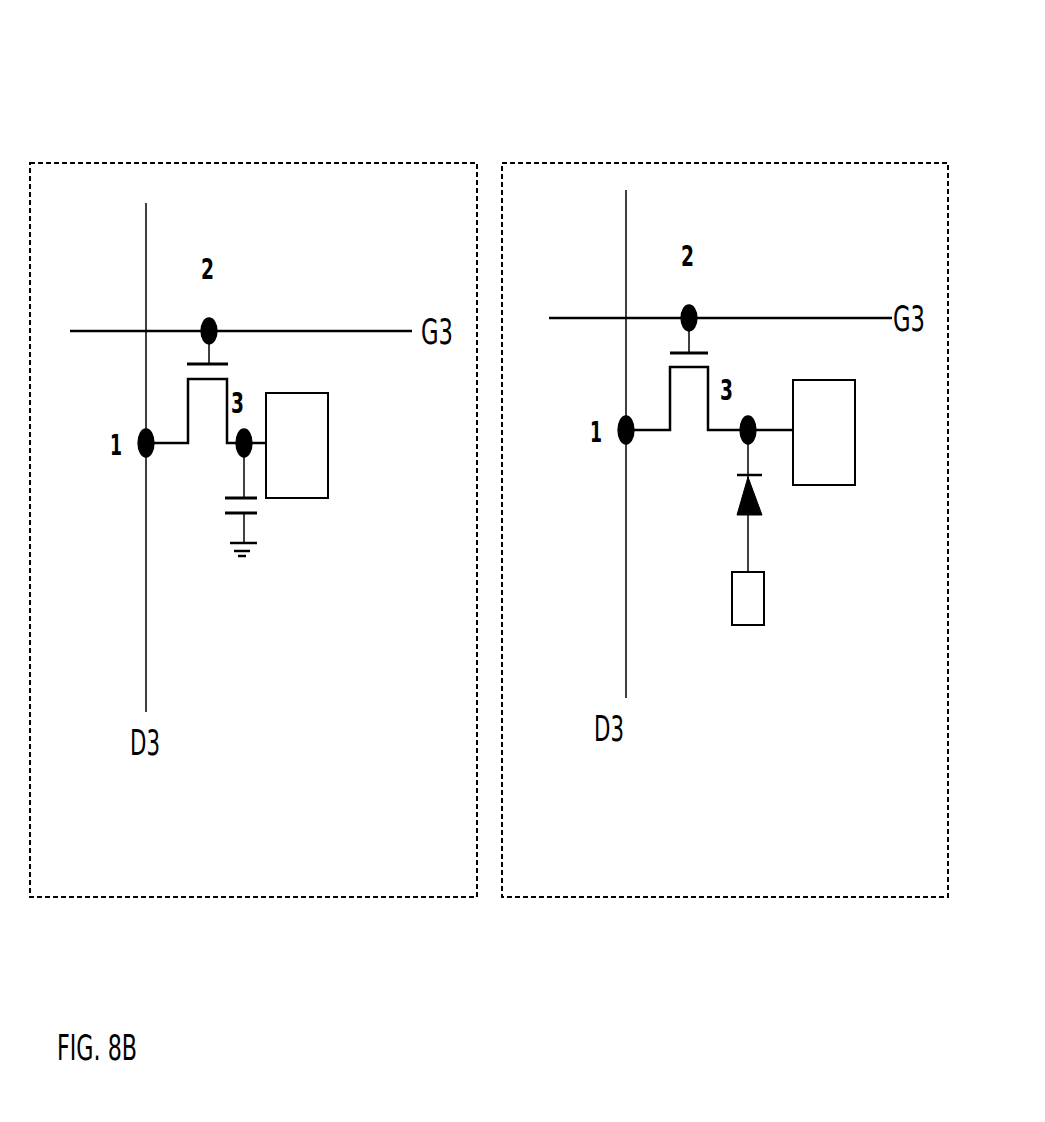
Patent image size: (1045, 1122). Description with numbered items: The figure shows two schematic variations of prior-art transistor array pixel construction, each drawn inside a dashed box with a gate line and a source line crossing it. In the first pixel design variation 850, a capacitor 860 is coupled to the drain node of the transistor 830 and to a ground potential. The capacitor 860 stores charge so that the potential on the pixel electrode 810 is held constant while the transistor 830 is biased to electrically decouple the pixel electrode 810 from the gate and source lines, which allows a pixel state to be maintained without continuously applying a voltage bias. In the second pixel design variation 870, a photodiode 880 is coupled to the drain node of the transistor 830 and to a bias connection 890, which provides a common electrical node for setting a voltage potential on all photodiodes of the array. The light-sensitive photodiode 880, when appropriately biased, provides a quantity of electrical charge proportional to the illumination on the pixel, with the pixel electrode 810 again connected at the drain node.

The first pixel design variation 850 is at (240, 162).
The second pixel design variation 870 is at (720, 162).
The transistor 830 is at (447, 406).
The pixel electrode 810 is at (330, 498).
The capacitor 860 is at (257, 519).
The photodiode 880 is at (762, 512).
The bias connection 890 is at (752, 622).